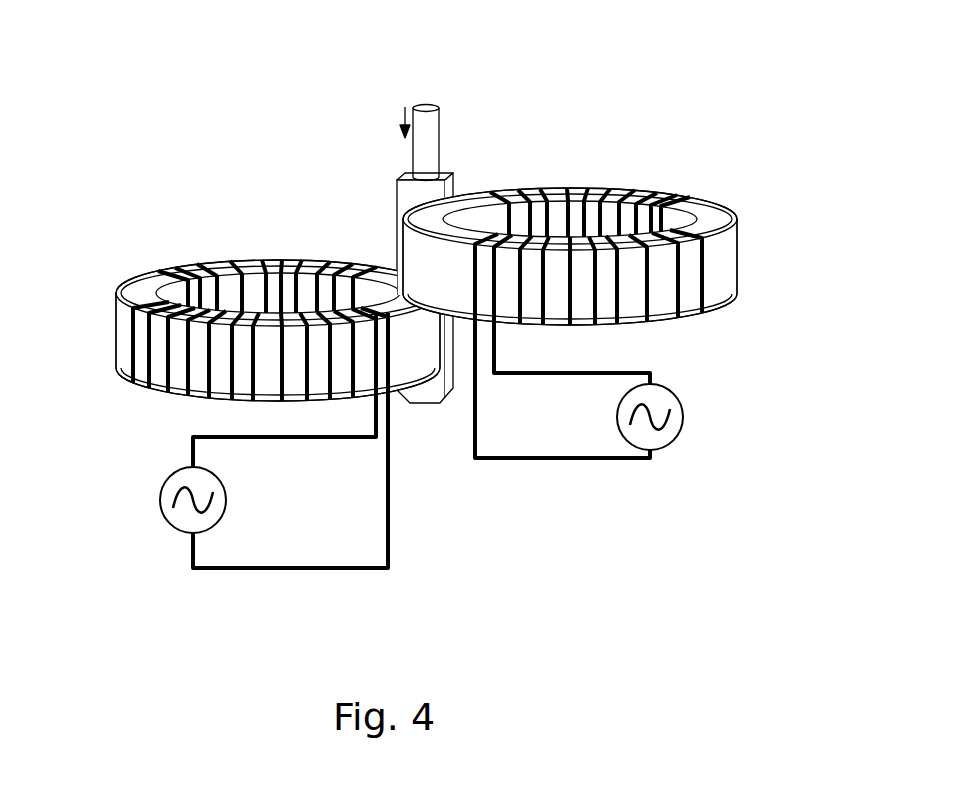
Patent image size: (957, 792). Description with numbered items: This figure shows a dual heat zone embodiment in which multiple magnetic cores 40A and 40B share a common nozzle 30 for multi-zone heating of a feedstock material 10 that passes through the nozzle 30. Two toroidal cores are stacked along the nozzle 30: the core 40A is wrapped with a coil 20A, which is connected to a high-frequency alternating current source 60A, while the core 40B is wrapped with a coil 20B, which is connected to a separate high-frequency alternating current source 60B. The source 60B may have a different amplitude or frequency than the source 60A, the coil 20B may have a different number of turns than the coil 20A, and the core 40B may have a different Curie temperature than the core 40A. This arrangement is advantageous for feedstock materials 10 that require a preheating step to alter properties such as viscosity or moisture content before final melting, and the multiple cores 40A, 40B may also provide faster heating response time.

The feedstock material 10 is at (424, 104).
The coil 20A is at (148, 382).
The coil 20B is at (648, 322).
The nozzle 30 is at (440, 385).
The magnetic core 40A is at (163, 273).
The magnetic core 40B is at (627, 190).
The high-frequency alternating current source 60A is at (157, 511).
The high-frequency alternating current source 60B is at (673, 450).